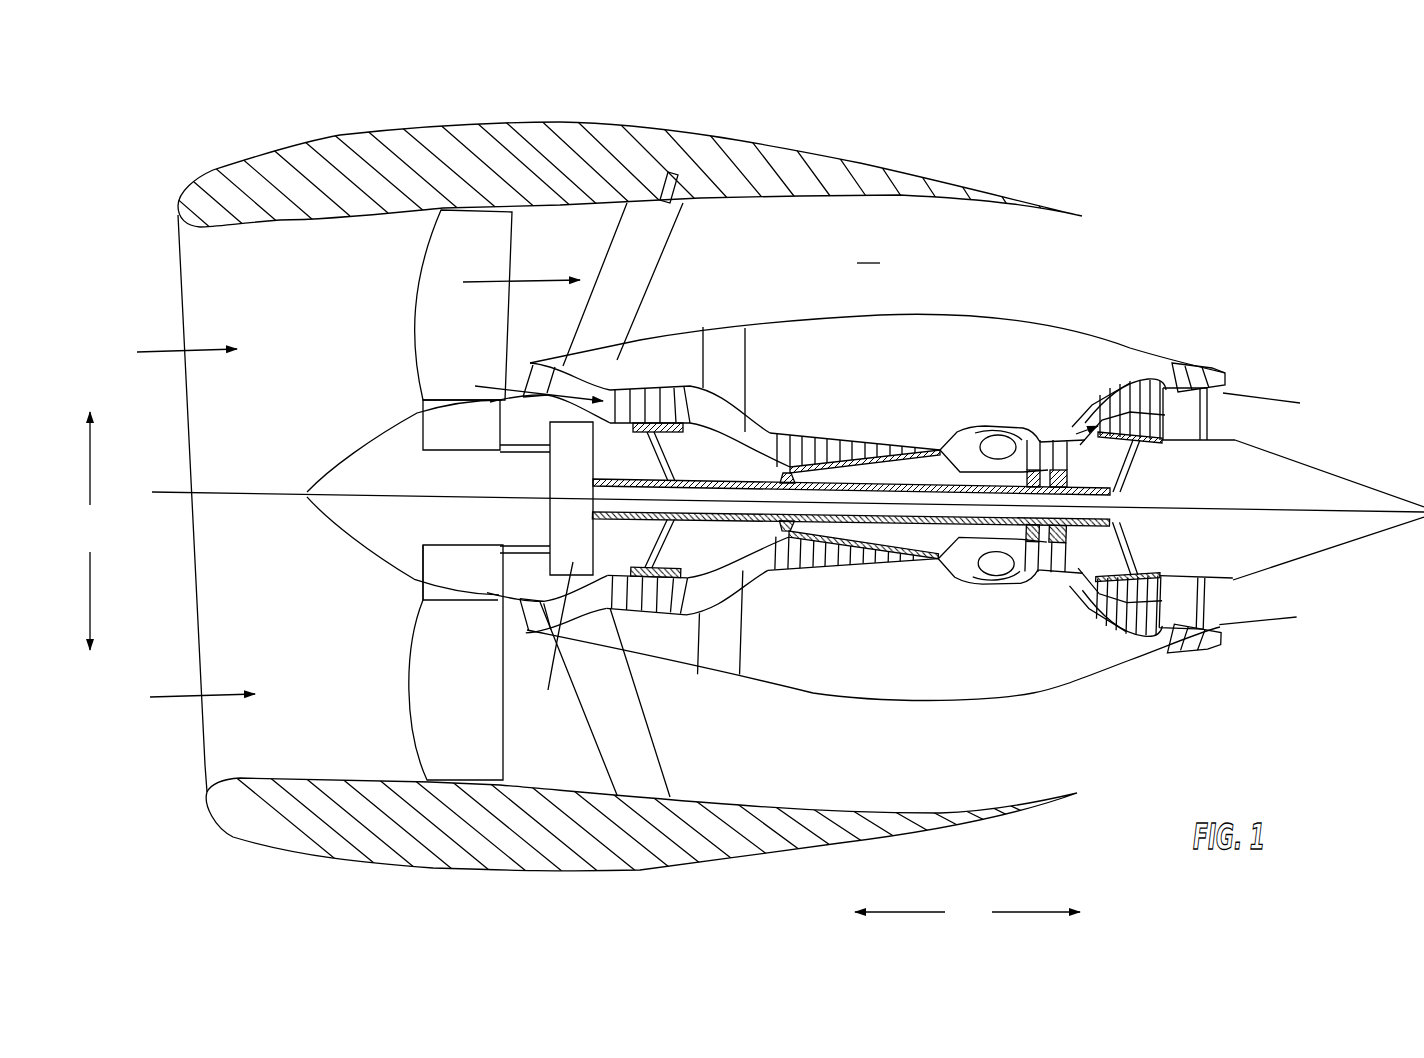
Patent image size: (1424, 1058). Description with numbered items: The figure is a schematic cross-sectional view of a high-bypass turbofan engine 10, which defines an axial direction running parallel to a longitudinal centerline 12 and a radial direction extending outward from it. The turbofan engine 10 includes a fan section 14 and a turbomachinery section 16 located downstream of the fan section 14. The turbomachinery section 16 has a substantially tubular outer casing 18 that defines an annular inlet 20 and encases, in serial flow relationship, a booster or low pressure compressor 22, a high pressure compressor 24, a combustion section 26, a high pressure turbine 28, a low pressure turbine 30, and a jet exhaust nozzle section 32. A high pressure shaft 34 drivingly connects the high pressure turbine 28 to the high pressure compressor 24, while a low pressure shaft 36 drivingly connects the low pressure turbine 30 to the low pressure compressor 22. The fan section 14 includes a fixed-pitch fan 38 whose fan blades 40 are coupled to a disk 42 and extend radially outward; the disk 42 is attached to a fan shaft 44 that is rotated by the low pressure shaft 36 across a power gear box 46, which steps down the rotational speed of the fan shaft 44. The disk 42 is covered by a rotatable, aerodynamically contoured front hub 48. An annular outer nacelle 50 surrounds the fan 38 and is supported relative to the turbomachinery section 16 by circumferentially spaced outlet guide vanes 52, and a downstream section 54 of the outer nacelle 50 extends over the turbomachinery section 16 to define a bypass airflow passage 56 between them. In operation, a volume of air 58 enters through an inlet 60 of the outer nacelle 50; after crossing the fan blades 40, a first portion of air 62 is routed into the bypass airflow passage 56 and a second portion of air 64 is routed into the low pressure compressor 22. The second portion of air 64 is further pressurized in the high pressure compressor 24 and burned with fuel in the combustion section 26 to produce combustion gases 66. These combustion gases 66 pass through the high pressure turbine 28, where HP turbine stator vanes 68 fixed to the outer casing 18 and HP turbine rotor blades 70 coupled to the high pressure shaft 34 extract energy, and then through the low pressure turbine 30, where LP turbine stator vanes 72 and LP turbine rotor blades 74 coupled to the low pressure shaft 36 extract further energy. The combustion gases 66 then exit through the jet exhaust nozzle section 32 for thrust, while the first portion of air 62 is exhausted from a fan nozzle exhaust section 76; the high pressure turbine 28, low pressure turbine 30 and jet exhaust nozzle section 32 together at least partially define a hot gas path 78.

The turbofan engine 10 is at (748, 479).
The longitudinal centerline 12 is at (1350, 507).
The fan section 14 is at (435, 425).
The turbomachinery section 16 is at (975, 502).
The outer casing 18 is at (888, 310).
The annular inlet 20 is at (522, 372).
The low pressure compressor 22 is at (665, 618).
The high pressure compressor 24 is at (850, 580).
The combustion section 26 is at (988, 594).
The high pressure turbine 28 is at (1045, 590).
The low pressure turbine 30 is at (1128, 642).
The jet exhaust nozzle section 32 is at (1240, 620).
The high pressure shaft 34 is at (968, 478).
The low pressure shaft 36 is at (1100, 507).
The fan 38 is at (435, 495).
The fan blades 40 is at (417, 333).
The disk 42 is at (437, 553).
The fan shaft 44 is at (517, 448).
The power gear box 46 is at (554, 644).
The front hub 48 is at (347, 537).
The outer nacelle 50 is at (553, 135).
The outlet guide vanes 52 is at (643, 293).
The downstream section 54 is at (910, 162).
The bypass airflow passage 56 is at (868, 248).
The volume of air 58 is at (167, 348).
The inlet 60 is at (198, 760).
The first portion of air 62 is at (527, 277).
The second portion of air 64 is at (583, 376).
The combustion gases 66 is at (1080, 416).
The HP turbine stator vanes 68 is at (1040, 585).
The HP turbine rotor blades 70 is at (1080, 600).
The LP turbine stator vanes 72 is at (1113, 622).
The LP turbine rotor blades 74 is at (1160, 660).
The fan nozzle exhaust section 76 is at (1040, 247).
The hot gas path 78 is at (1122, 400).